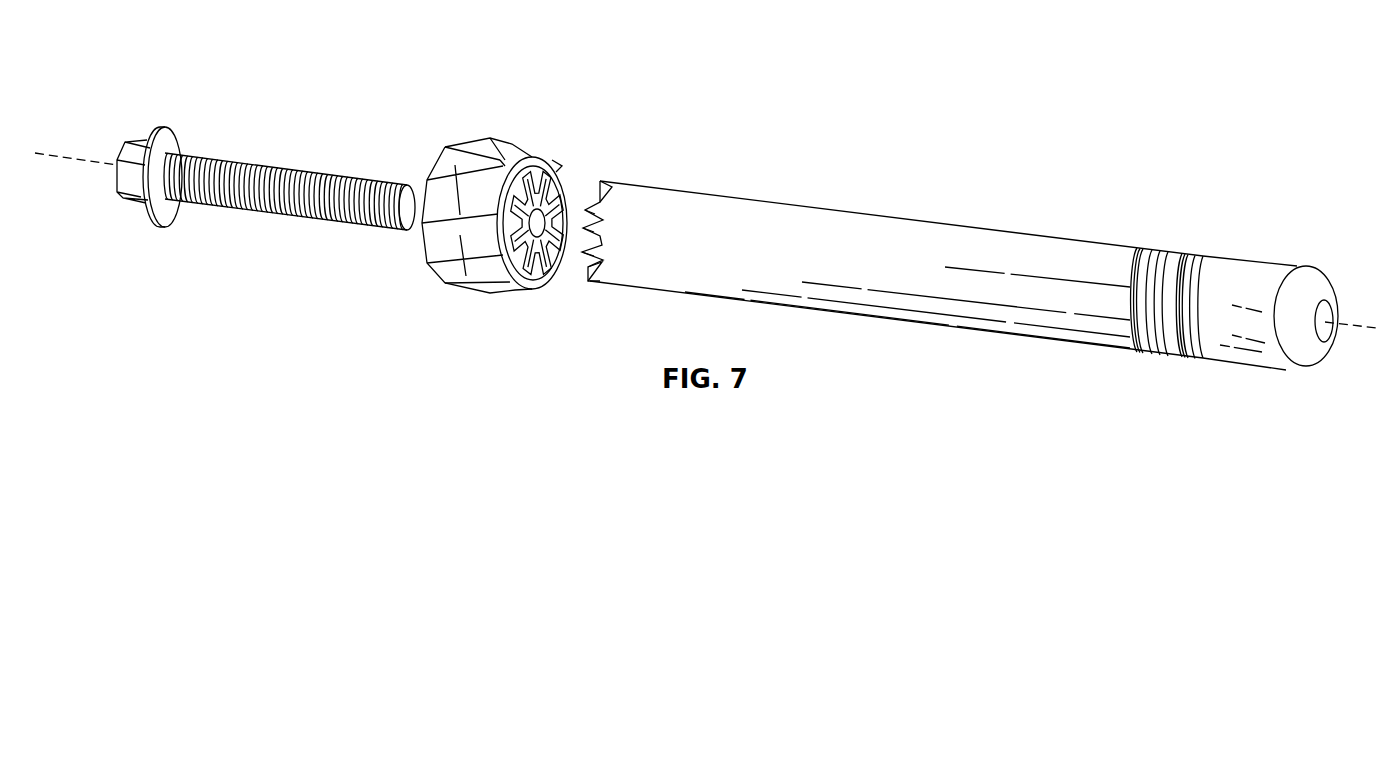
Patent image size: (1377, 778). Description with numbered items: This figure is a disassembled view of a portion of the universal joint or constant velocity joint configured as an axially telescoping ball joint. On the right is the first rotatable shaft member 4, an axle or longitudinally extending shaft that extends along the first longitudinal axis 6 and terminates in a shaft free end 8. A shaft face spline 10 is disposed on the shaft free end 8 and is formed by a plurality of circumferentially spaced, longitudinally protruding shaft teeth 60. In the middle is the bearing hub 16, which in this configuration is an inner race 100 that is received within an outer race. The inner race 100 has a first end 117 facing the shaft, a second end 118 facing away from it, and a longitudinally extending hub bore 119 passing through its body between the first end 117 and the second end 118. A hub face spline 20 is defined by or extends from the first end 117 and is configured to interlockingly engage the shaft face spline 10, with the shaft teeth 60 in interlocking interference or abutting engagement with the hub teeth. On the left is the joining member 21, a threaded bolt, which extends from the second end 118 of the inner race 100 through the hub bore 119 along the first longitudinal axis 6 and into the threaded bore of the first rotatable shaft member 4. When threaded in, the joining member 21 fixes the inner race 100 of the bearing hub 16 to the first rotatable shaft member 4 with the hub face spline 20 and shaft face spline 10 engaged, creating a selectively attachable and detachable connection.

The first rotatable shaft member 4 is at (961, 249).
The first longitudinal axis 6 is at (1356, 332).
The shaft free end 8 is at (622, 181).
The shaft face spline 10 is at (597, 209).
The bearing hub 16 is at (326, 206).
The hub face spline 20 is at (565, 162).
The joining member 21 is at (198, 122).
The shaft teeth 60 is at (582, 263).
The inner race 100 is at (492, 222).
The first end 117 is at (558, 164).
The second end 118 is at (447, 153).
The hub bore 119 is at (547, 273).